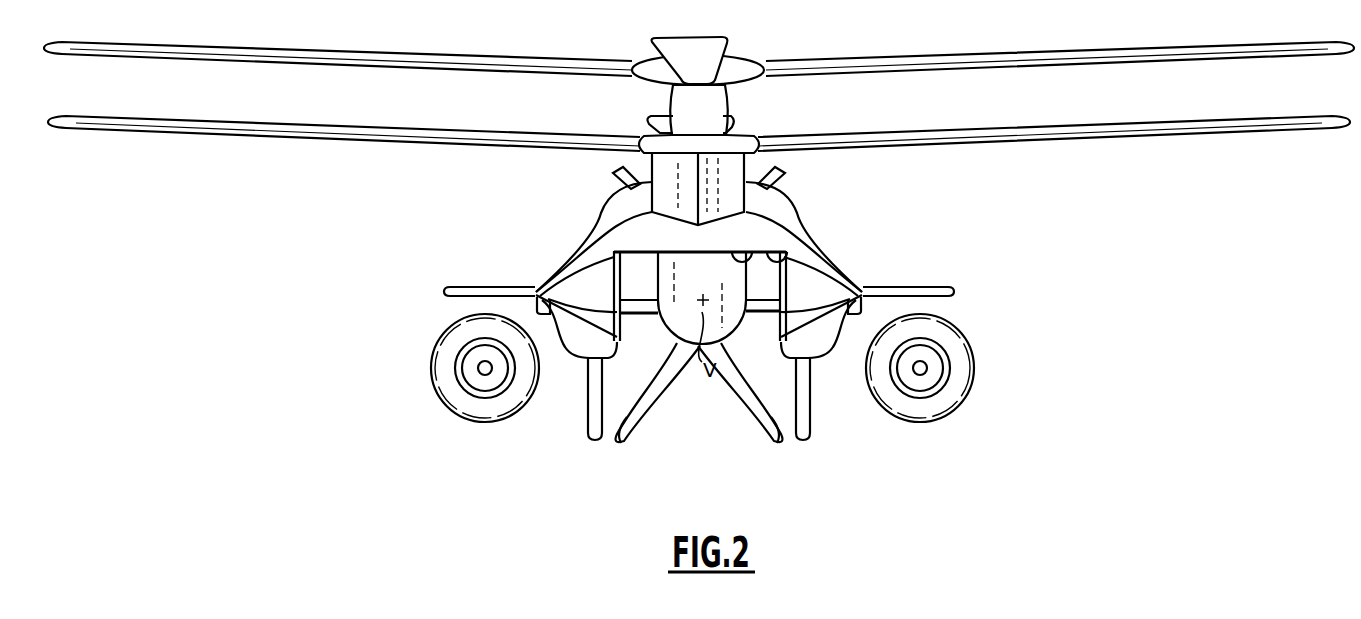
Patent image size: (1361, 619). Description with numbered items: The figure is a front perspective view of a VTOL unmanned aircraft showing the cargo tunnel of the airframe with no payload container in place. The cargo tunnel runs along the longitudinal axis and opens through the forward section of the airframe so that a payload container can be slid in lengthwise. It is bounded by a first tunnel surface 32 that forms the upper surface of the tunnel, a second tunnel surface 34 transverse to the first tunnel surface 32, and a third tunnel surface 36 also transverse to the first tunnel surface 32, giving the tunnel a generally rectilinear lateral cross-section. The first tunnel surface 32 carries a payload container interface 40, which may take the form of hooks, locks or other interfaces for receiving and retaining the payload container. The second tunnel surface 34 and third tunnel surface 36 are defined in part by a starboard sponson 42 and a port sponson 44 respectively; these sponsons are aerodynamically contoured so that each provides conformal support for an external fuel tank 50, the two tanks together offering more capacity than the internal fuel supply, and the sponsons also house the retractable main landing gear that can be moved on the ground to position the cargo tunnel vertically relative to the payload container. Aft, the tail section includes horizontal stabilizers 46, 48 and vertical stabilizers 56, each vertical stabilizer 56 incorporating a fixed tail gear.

The first tunnel surface 32 is at (814, 243).
The second tunnel surface 34 is at (620, 322).
The third tunnel surface 36 is at (784, 326).
The payload container interface 40 is at (733, 287).
The starboard sponson 42 is at (583, 285).
The port sponson 44 is at (813, 283).
The horizontal stabilizer 46 is at (472, 286).
The horizontal stabilizer 48 is at (916, 287).
The external fuel tank 50 is at (482, 407).
The vertical stabilizer 56 is at (588, 420).